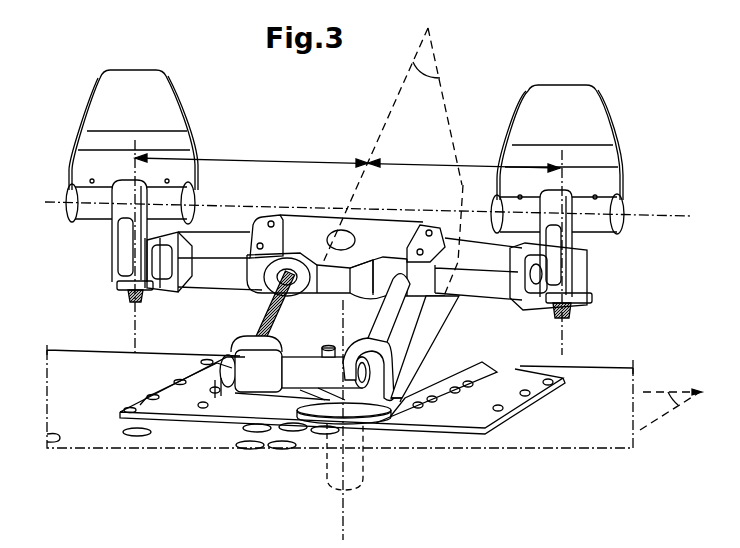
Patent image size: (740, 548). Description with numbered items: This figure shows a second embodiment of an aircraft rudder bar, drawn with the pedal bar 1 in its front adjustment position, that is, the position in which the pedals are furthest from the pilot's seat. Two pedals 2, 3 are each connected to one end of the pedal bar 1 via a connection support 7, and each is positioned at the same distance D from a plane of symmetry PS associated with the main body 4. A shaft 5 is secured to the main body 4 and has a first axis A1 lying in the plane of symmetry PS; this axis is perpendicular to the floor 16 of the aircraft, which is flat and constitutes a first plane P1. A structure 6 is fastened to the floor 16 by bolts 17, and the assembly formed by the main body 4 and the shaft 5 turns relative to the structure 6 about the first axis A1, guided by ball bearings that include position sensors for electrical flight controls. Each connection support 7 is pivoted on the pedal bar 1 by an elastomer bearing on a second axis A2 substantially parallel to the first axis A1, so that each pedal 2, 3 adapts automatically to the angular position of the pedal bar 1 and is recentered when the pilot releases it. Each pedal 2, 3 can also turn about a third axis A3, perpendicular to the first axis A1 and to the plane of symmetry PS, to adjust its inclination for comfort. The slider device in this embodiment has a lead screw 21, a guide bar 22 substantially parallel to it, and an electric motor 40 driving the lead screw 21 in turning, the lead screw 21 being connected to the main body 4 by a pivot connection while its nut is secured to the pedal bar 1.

The pedal bar 1 is at (474, 242).
The pedal 2 is at (578, 102).
The pedal 3 is at (134, 88).
The main body 4 is at (440, 345).
The shaft 5 is at (330, 462).
The structure 6 is at (445, 355).
The connection support 7 is at (118, 238).
The floor 16 is at (557, 430).
The bolts 17 is at (195, 372).
The lead screw 21 is at (268, 307).
The guide bar 22 is at (398, 296).
The electric motor 40 is at (262, 373).
The first axis A1 is at (347, 518).
The second axis A2 is at (135, 317).
The third axis A3 is at (55, 203).
The distance D is at (347, 154).
The plane of symmetry PS is at (423, 62).
The first plane P1 is at (676, 405).